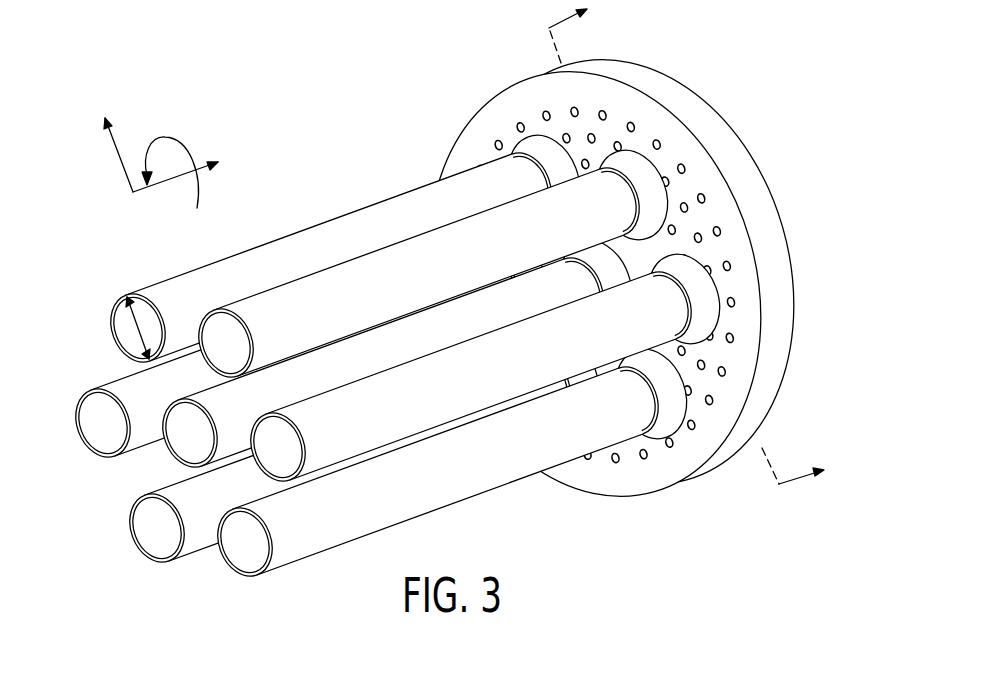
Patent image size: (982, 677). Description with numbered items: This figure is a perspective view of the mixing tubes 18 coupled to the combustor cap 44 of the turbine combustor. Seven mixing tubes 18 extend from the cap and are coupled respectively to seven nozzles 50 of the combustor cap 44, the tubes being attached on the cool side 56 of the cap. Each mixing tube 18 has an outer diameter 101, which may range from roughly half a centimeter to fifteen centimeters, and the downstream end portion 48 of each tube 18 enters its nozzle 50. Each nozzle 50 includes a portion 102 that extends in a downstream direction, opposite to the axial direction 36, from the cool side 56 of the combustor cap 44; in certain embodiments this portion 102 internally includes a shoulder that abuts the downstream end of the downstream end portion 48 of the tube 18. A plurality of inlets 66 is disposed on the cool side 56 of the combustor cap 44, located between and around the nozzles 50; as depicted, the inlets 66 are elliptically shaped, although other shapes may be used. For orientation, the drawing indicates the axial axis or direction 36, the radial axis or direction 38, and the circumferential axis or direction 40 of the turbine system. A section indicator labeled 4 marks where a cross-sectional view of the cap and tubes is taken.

The mixing tubes 18 is at (169, 289).
The axial axis or direction 36 is at (170, 182).
The radial axis or direction 38 is at (123, 155).
The circumferential axis or direction 40 is at (187, 150).
The combustor cap 44 is at (742, 150).
The downstream end portion 48 is at (462, 177).
The nozzles 50 is at (710, 285).
The cool side 56 is at (752, 372).
The inlets 66 is at (640, 130).
The outer diameter 101 is at (133, 330).
The portion 102 is at (693, 332).
The section line 4- 4 is at (686, 244).